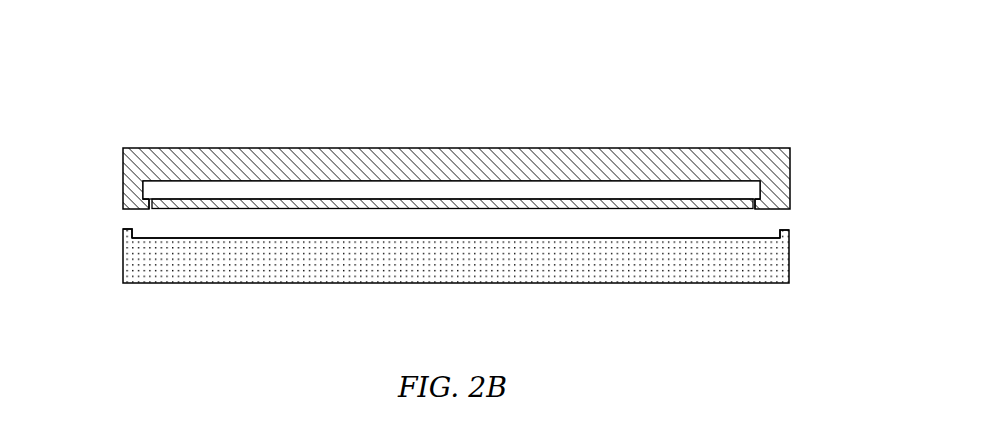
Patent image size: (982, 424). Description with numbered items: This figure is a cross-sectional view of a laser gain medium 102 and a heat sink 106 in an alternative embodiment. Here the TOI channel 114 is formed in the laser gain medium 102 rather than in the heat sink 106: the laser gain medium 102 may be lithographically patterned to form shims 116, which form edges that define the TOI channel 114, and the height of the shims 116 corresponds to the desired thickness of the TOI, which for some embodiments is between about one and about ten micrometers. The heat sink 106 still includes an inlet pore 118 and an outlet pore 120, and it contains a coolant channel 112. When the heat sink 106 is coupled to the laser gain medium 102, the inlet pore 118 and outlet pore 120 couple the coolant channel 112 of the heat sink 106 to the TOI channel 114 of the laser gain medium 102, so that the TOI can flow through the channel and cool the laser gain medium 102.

The laser gain medium 102 is at (308, 283).
The heat sink 106 is at (448, 148).
The coolant channel 112 is at (366, 191).
The TOI channel 114 is at (555, 233).
The shims 116 is at (122, 230).
The inlet pore 118 is at (150, 192).
The outlet pore 120 is at (753, 194).